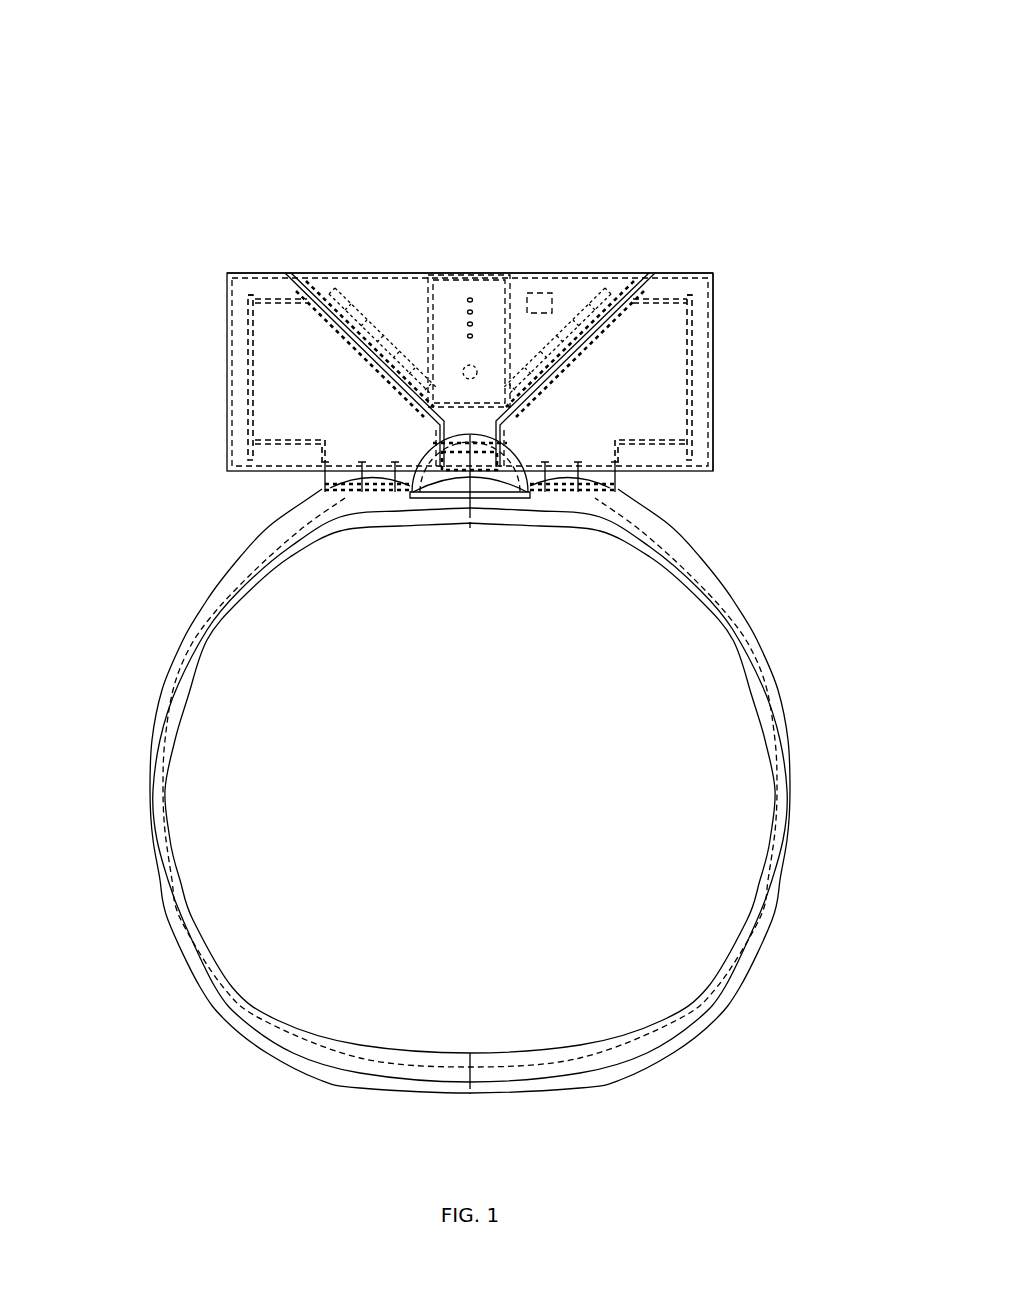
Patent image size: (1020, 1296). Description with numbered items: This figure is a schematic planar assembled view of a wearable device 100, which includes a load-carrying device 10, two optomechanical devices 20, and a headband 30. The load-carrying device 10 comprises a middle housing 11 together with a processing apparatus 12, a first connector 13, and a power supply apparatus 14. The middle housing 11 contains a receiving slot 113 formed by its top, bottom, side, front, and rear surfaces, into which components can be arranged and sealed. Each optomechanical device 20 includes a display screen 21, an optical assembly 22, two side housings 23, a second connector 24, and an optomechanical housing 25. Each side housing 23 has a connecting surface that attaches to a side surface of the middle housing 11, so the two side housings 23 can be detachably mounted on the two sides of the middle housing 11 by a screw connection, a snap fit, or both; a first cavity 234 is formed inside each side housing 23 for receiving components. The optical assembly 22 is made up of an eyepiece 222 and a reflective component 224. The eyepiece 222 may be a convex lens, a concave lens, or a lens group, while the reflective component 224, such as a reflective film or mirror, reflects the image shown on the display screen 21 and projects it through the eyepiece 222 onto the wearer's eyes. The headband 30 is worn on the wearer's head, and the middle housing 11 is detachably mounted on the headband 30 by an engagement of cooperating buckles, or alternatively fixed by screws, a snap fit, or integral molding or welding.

The wearable device 100 is at (474, 46).
The load-carrying device 10 is at (545, 185).
The middle housing 11 is at (343, 271).
The processing apparatus 12 is at (543, 293).
The first connector 13 is at (373, 340).
The power supply apparatus 14 is at (481, 275).
The receiving slot 113 is at (591, 271).
The optomechanical device 20 is at (118, 280).
The display screen 21 is at (253, 318).
The optical assembly 22 is at (163, 423).
The eyepiece 222 is at (325, 490).
The reflective component 224 is at (400, 395).
The side housing 23 is at (229, 278).
The first cavity 234 is at (249, 296).
The second connector 24 is at (337, 330).
The optomechanical housing 25 is at (317, 377).
The headband 30 is at (740, 613).